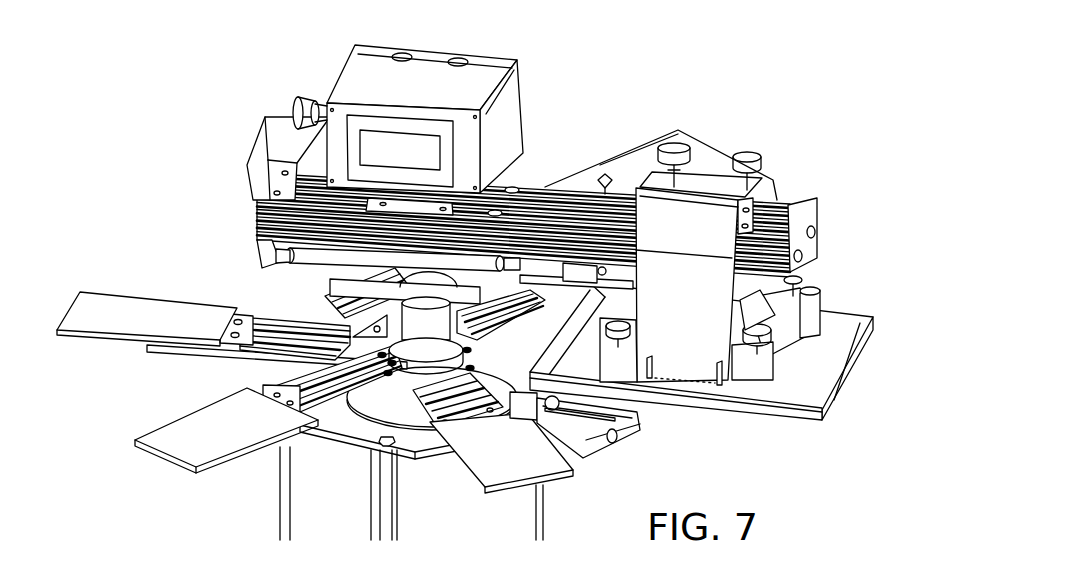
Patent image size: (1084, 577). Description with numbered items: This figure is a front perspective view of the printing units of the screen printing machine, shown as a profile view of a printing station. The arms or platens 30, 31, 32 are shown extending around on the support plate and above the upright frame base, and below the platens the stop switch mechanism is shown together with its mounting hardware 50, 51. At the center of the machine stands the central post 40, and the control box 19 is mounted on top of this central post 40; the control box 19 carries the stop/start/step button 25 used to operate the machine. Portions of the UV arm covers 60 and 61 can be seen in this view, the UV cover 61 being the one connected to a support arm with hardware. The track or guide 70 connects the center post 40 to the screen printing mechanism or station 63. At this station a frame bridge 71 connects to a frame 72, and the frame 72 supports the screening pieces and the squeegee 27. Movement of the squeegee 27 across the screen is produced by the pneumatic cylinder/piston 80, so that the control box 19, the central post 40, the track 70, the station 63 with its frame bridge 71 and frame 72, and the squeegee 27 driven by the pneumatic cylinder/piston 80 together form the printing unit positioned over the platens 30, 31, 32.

The control box 19 is at (492, 62).
The stop/start/step button 25 is at (296, 102).
The squeegee 27 is at (800, 352).
The platen 30 is at (100, 347).
The platen 31 is at (162, 459).
The platen 32 is at (483, 491).
The central post 40 is at (393, 324).
The mounting hardware 50 is at (597, 442).
The mounting hardware 51 is at (608, 420).
The UV arm cover 60 is at (650, 142).
The UV arm cover 61 is at (242, 163).
The screen printing mechanism 63 is at (729, 371).
The track 70 is at (527, 186).
The frame bridge 71 is at (708, 150).
The frame 72 is at (862, 306).
The pneumatic cylinder/piston 80 is at (320, 274).